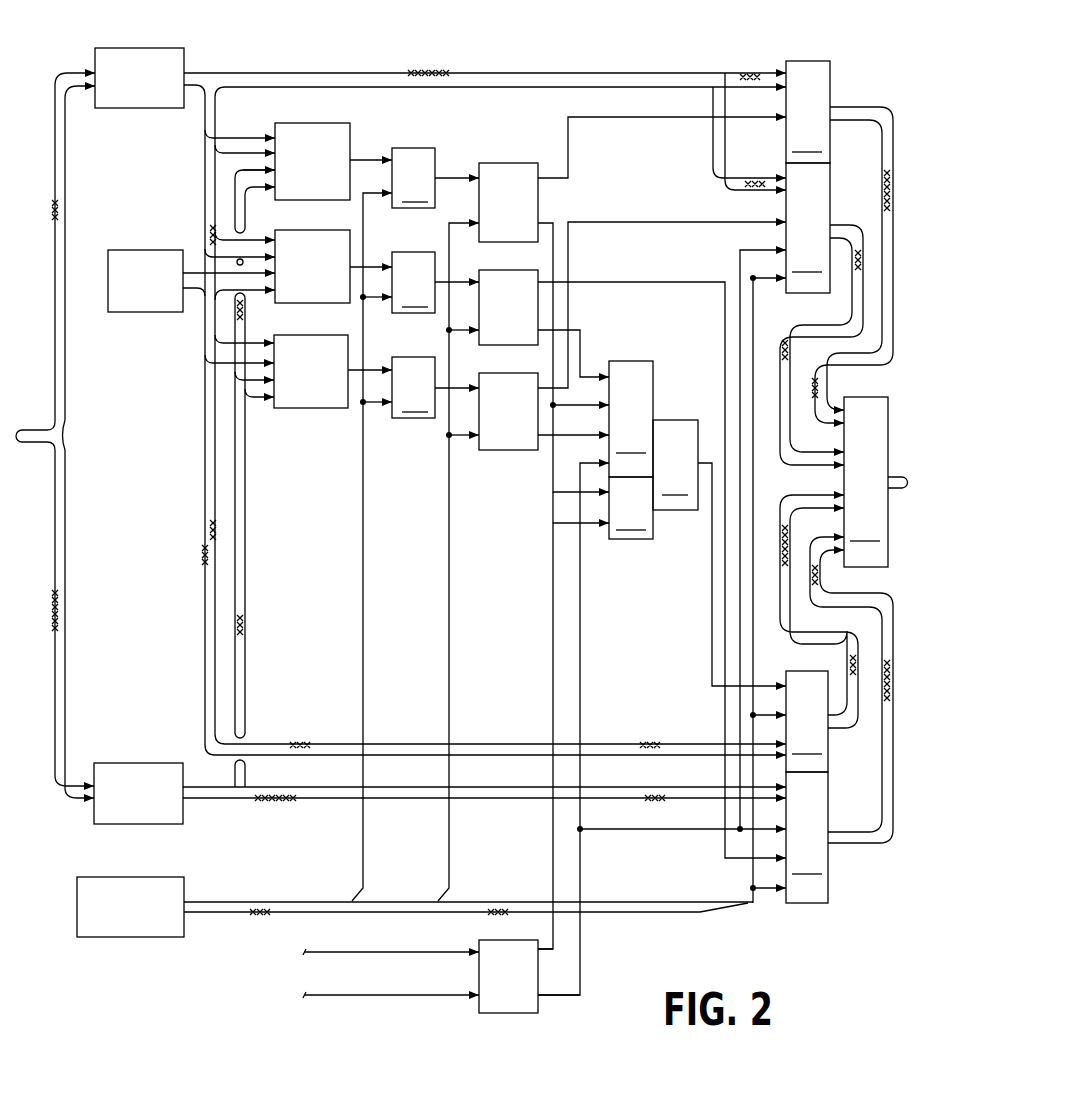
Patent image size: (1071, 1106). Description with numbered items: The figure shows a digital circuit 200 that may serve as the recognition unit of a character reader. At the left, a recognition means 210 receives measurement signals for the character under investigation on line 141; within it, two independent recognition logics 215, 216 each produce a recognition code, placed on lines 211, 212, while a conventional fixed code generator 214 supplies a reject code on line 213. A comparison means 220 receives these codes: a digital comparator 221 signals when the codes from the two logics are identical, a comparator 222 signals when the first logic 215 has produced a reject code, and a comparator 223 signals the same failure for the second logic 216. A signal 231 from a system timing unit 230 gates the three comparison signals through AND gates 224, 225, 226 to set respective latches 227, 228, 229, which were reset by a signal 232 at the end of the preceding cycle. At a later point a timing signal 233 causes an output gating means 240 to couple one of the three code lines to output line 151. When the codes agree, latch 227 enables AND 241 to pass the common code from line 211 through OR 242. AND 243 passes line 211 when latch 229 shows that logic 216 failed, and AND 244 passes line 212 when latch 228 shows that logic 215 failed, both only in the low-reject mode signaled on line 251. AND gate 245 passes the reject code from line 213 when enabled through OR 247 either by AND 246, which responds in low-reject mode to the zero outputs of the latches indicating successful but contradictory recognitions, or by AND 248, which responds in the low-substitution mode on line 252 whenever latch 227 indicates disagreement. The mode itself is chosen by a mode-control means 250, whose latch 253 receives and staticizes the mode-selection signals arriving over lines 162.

The line 141 is at (65, 423).
The output line 151 is at (898, 477).
The lines 162 is at (305, 973).
The digital circuit 200 is at (290, 66).
The recognition means 210 is at (100, 44).
The line 211 is at (412, 90).
The line 212 is at (300, 800).
The line 213 is at (200, 270).
The fixed code generator 214 is at (150, 314).
The recognition logic 215 is at (140, 112).
The recognition logic 216 is at (146, 761).
The comparison means 220 is at (475, 70).
The digital comparator 221 is at (320, 122).
The comparator 222 is at (320, 230).
The comparator 223 is at (325, 410).
The AND gate 224 is at (435, 178).
The AND gate 225 is at (435, 282).
The AND gate 226 is at (435, 387).
The latch 227 is at (512, 162).
The latch 228 is at (512, 269).
The latch 229 is at (512, 452).
The system timing unit 230 is at (140, 876).
The signal 231 is at (363, 590).
The signal 232 is at (449, 587).
The timing signal 233 is at (753, 876).
The output gating means 240 is at (735, 68).
The AND gate 241 is at (839, 242).
The OR gate 242 is at (866, 482).
The AND gate 243 is at (821, 314).
The AND gate 244 is at (839, 720).
The AND gate 245 is at (819, 633).
The AND gate 246 is at (631, 419).
The OR gate 247 is at (719, 553).
The AND gate 248 is at (631, 508).
The mode-control means 250 is at (590, 963).
The line 251 is at (582, 868).
The line 252 is at (553, 857).
The latch 253 is at (505, 1015).